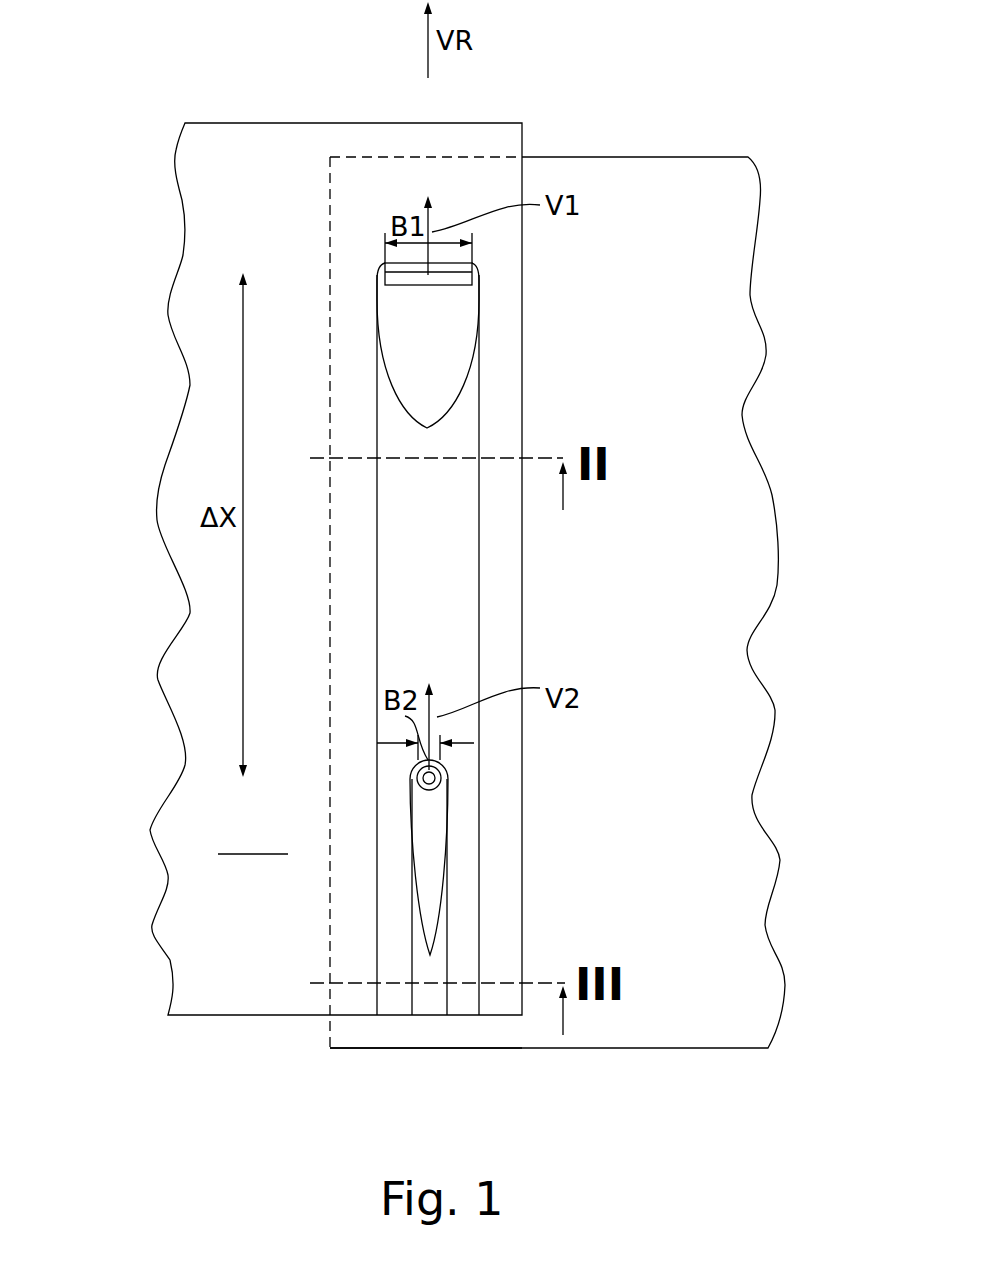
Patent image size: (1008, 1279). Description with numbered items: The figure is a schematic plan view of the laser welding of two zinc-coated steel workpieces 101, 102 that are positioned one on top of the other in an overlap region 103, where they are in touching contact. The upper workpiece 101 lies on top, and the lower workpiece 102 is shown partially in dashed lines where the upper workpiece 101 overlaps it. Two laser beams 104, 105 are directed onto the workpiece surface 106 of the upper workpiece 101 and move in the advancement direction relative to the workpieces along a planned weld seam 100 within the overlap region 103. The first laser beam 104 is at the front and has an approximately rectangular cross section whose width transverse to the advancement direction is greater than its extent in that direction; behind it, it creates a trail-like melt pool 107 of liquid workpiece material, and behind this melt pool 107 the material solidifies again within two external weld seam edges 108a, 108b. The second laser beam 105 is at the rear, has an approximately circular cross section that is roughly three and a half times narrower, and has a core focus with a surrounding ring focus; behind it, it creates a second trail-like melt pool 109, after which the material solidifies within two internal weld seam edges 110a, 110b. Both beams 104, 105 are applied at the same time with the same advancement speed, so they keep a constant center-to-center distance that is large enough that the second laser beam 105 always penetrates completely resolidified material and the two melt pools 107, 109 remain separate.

The weld seam 100 is at (427, 960).
The upper workpiece 101 is at (216, 975).
The lower workpiece 102 is at (688, 1024).
The overlap region 103 is at (525, 1062).
The first laser beam 104 is at (465, 283).
The second laser beam 105 is at (445, 790).
The workpiece surface 106 is at (253, 840).
The melt pool 107 is at (437, 365).
The external weld seam edge 108a is at (377, 612).
The external weld seam edge 108b is at (480, 603).
The melt pool 109 is at (432, 852).
The internal weld seam edge 110a is at (412, 943).
The internal weld seam edge 110b is at (447, 940).